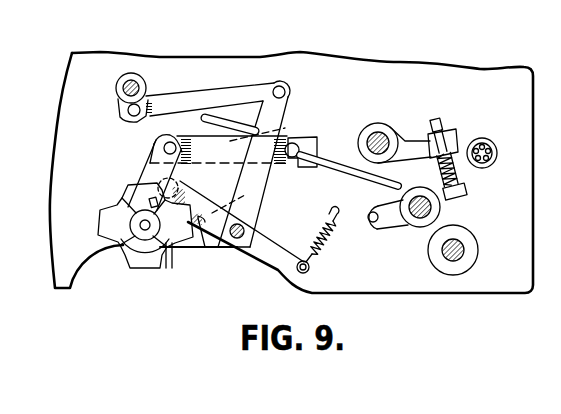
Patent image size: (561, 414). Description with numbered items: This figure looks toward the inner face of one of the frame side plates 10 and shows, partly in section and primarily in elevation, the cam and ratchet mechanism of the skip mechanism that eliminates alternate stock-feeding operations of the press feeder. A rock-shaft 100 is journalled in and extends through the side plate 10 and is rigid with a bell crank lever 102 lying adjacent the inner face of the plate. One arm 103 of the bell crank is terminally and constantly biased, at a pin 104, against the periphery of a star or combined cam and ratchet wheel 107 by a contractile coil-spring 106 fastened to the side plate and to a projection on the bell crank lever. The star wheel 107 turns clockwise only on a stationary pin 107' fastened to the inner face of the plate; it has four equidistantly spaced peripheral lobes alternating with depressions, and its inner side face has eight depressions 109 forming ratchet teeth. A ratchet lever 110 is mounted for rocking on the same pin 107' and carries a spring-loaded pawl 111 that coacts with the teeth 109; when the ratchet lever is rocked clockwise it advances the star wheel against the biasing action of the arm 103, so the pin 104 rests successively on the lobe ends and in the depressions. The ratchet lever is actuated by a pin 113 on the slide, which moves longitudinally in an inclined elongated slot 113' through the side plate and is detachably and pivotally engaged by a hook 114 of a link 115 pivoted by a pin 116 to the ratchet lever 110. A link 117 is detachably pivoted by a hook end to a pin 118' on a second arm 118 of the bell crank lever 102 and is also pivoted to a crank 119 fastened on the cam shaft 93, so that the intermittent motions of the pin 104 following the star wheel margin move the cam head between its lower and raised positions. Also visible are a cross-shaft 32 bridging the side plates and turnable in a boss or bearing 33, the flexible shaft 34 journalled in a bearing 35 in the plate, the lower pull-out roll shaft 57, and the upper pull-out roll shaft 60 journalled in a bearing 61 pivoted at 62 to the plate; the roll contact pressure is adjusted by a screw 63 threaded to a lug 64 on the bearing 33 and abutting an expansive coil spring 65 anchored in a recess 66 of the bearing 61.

The side plate 10 is at (368, 102).
The cam shaft 93 is at (127, 77).
The crank 119 is at (119, 96).
The link 117 is at (188, 103).
The pin 118' is at (297, 86).
The second arm 118 is at (271, 172).
The bell crank lever 102 is at (258, 214).
The rock-shaft 100 is at (237, 239).
The link 115 is at (225, 154).
The hook 114 is at (310, 138).
The pin 113 is at (315, 144).
The inclined elongated slot 113' is at (349, 176).
The pin 116 is at (164, 145).
The ratchet lever 110 is at (152, 168).
The depressions 109 is at (182, 254).
The arm 103 is at (207, 248).
The star wheel 107 is at (139, 237).
The stationary pin 107' is at (134, 261).
The spring-loaded pawl 111 is at (150, 200).
The pin 104 is at (176, 190).
The contractile coil-spring 106 is at (334, 240).
The cross-shaft 32 is at (384, 131).
The lug 64 is at (414, 142).
The screw 63 is at (440, 125).
The expansive coil spring 65 is at (467, 183).
The recess 66 is at (466, 193).
The bearing 33 is at (455, 138).
The flexible shaft 34 is at (497, 152).
The bearing 35 is at (492, 142).
The bearing 61 is at (417, 194).
The cross-shaft 60 is at (438, 209).
The pivot 62 is at (400, 206).
The cross-shaft 57 is at (466, 248).